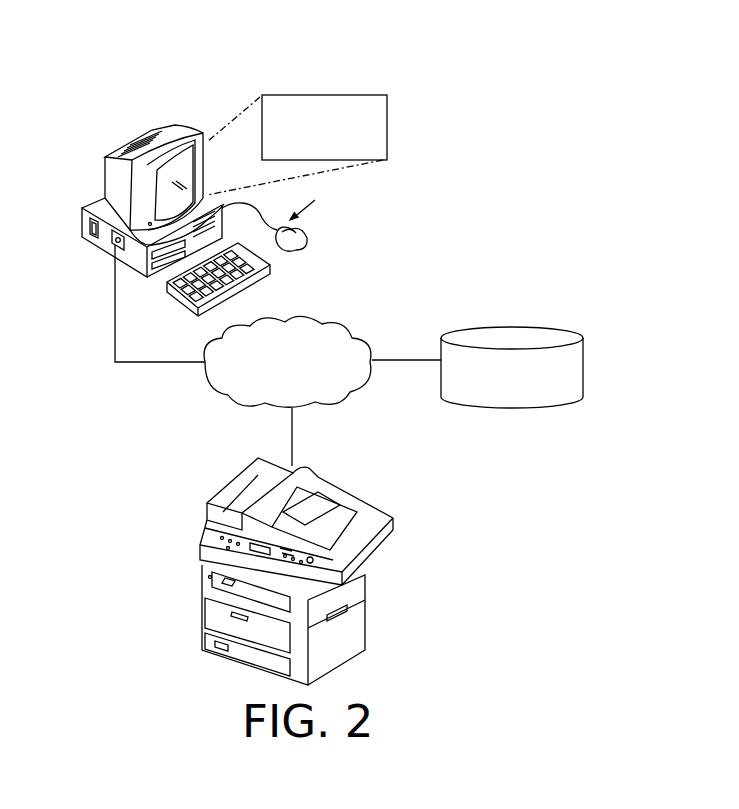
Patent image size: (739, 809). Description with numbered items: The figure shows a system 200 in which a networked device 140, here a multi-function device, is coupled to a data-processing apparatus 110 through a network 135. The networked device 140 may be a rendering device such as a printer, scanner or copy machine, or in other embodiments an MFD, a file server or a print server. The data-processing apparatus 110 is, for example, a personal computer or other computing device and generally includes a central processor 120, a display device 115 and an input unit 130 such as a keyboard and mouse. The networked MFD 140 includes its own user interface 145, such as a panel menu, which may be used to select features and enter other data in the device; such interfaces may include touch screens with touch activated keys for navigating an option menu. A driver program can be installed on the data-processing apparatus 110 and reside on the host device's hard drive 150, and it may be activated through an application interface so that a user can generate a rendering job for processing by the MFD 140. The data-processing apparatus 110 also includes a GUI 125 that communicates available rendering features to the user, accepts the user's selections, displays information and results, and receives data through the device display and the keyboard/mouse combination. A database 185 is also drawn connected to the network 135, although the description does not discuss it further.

The data-processing apparatus 110 is at (181, 140).
The display device 115 is at (160, 181).
The central processor 120 is at (103, 252).
The GUI 125 is at (388, 127).
The input unit 130 is at (298, 212).
The network 135 is at (293, 320).
The networked device 140 is at (299, 566).
The user interface 145 is at (273, 527).
The hard drive 150 is at (83, 222).
The database 185 is at (510, 326).
The system 200 is at (505, 158).